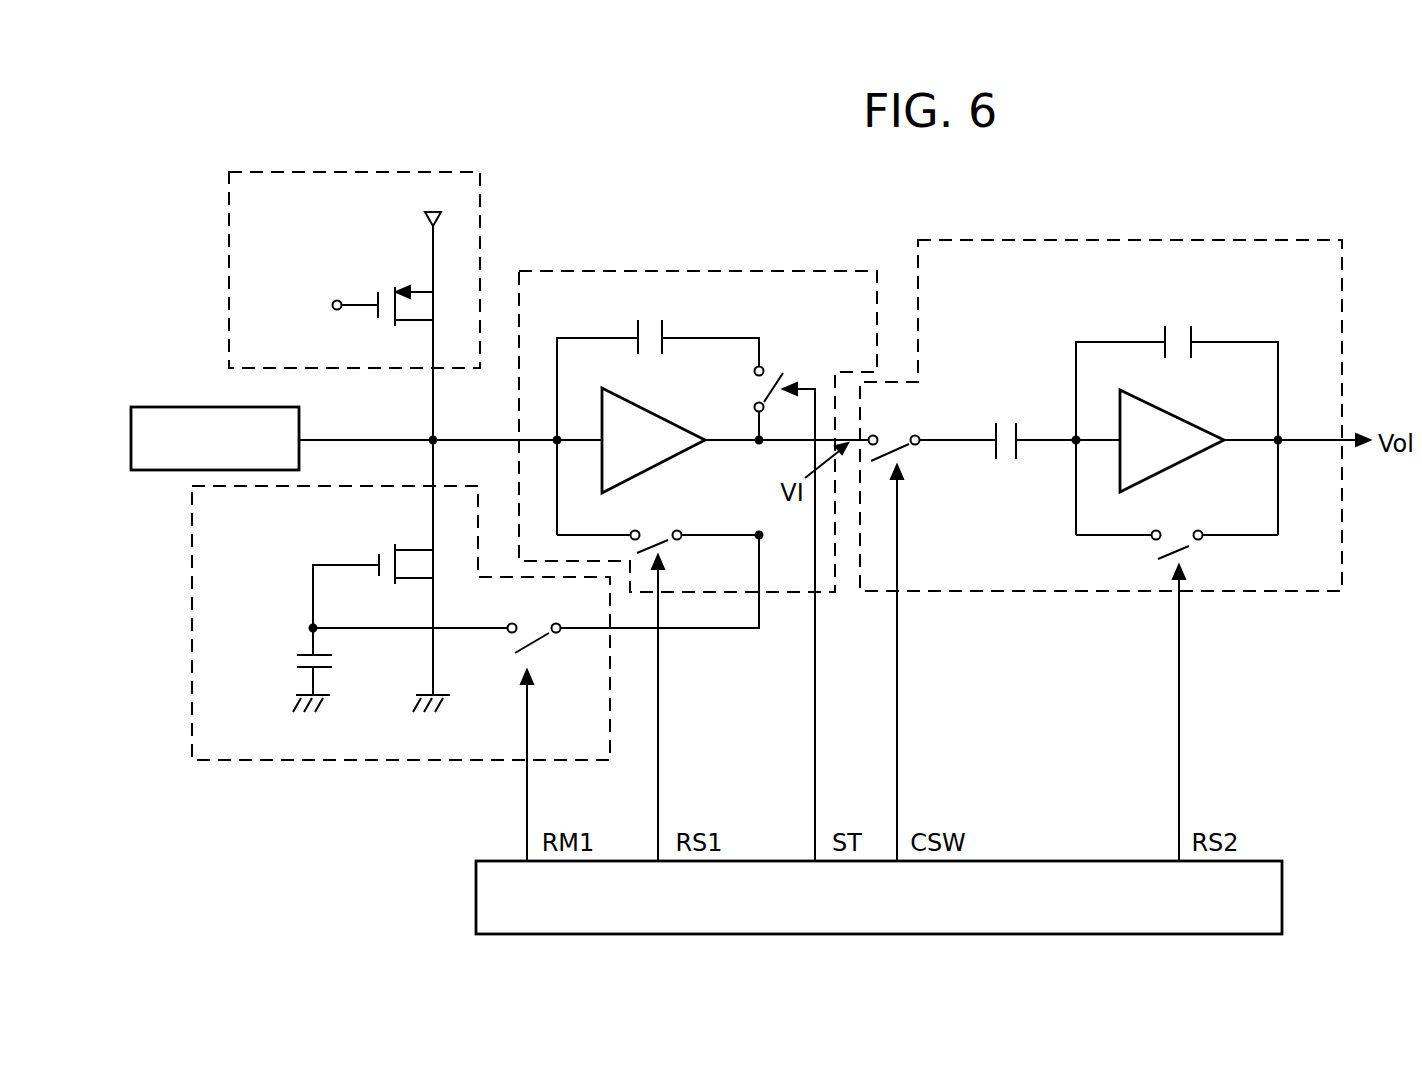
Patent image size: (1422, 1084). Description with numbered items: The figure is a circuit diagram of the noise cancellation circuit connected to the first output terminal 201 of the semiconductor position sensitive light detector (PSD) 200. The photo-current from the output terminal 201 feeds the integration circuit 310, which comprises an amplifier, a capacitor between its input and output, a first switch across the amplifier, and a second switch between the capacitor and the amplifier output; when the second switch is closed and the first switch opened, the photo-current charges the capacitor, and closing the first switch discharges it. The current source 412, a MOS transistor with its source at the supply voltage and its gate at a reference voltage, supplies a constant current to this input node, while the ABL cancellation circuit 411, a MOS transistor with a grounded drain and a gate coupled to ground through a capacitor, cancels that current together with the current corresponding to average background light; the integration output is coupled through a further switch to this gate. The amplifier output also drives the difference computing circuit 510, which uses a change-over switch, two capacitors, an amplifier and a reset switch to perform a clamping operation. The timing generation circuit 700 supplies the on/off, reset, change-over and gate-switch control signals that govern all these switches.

The semiconductor position sensitive light detector (PSD) 200 is at (203, 407).
The first output terminal 201 is at (300, 439).
The integration circuit 310 is at (752, 268).
The ABL cancellation circuit 411 is at (305, 763).
The current source 412 is at (481, 201).
The difference computing circuit 510 is at (1237, 236).
The timing generation circuit 700 is at (1283, 890).